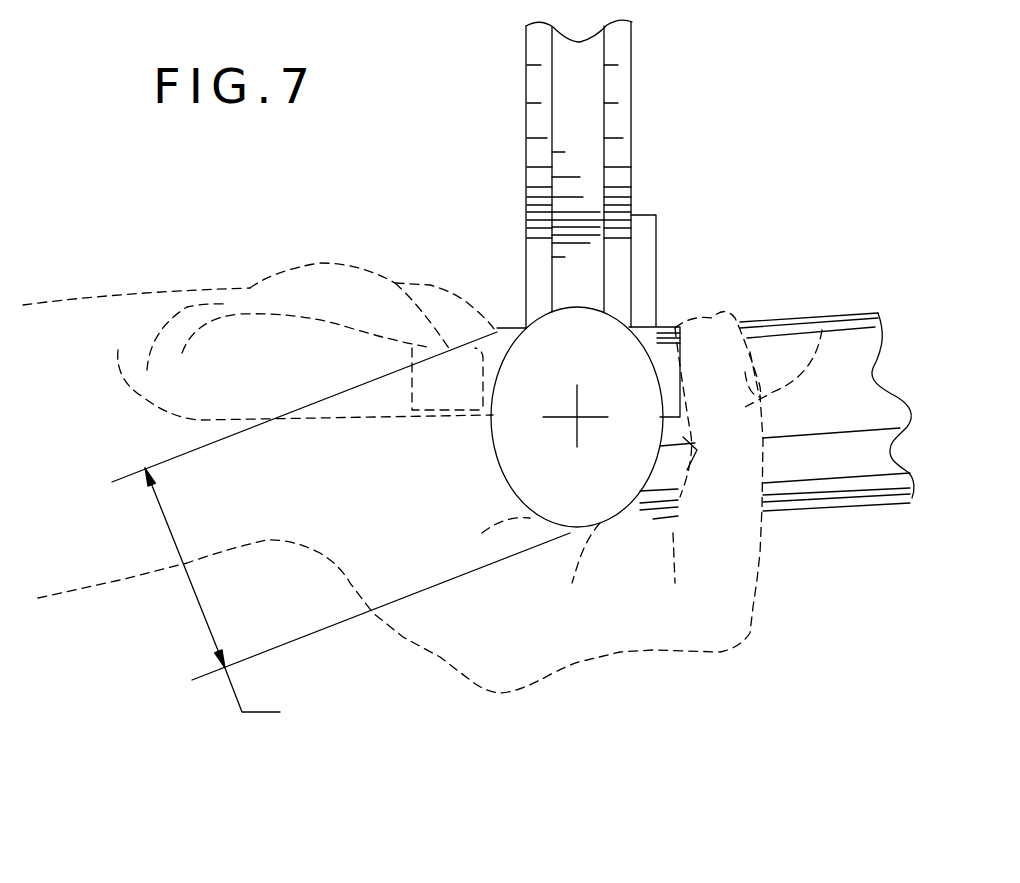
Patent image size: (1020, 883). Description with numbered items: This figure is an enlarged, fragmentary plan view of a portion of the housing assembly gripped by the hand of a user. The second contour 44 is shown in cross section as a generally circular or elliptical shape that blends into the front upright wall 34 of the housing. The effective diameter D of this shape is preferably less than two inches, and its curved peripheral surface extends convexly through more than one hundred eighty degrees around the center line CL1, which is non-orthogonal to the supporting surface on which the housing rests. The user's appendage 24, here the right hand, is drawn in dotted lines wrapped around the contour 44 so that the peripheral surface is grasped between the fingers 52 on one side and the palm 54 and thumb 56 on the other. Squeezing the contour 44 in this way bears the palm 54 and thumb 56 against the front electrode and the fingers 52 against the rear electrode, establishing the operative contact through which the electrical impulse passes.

The appendage 24 is at (765, 548).
The upright wall 34 is at (572, 133).
The second contour 44 is at (540, 517).
The fingers 52 is at (822, 330).
The palm 54 is at (215, 305).
The thumb 56 is at (360, 365).
The center line CL1 is at (580, 417).
The effective diameter D is at (223, 598).